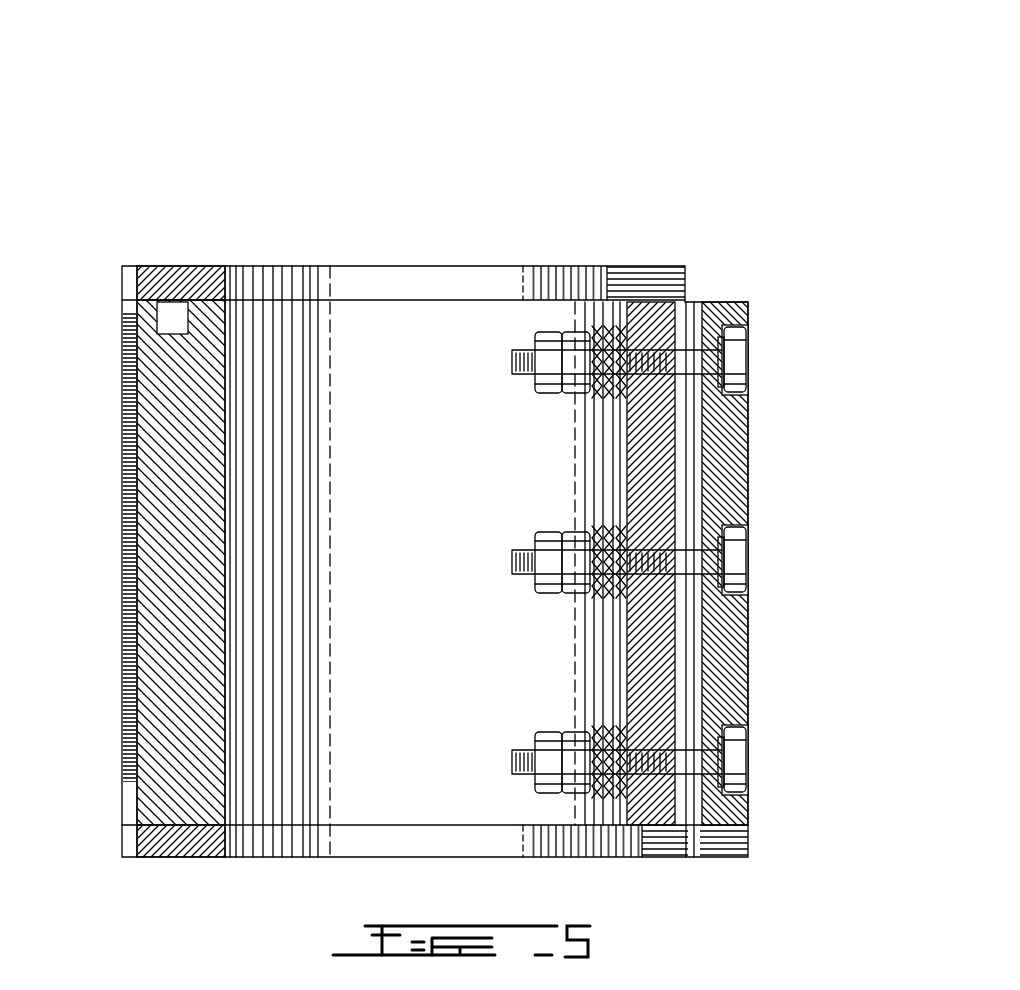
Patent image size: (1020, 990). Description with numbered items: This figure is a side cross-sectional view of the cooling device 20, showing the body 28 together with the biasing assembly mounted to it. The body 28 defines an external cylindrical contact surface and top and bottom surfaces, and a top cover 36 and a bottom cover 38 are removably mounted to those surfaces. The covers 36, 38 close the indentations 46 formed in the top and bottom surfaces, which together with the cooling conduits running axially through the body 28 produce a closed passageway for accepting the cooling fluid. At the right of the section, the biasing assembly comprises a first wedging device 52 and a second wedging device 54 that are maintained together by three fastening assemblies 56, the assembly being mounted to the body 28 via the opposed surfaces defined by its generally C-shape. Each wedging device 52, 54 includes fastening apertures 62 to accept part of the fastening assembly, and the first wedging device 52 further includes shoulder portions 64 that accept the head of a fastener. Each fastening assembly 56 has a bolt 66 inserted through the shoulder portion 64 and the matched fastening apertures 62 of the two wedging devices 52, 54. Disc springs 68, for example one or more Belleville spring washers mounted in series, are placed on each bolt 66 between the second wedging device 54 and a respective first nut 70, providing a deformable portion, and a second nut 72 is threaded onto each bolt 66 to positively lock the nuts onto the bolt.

The cooling device 20 is at (652, 182).
The body 28 is at (167, 857).
The top cover 36 is at (178, 280).
The bottom cover 38 is at (203, 858).
The indentations 46 is at (168, 315).
The first wedging device 52 is at (730, 472).
The second wedging device 54 is at (647, 445).
The fastening assembly 56 is at (502, 360).
The fastening apertures 62 is at (688, 345).
The shoulder portions 64 is at (728, 333).
The bolt 66 is at (747, 362).
The disc springs 68 is at (615, 325).
The first nut 70 is at (573, 387).
The second nut 72 is at (547, 353).